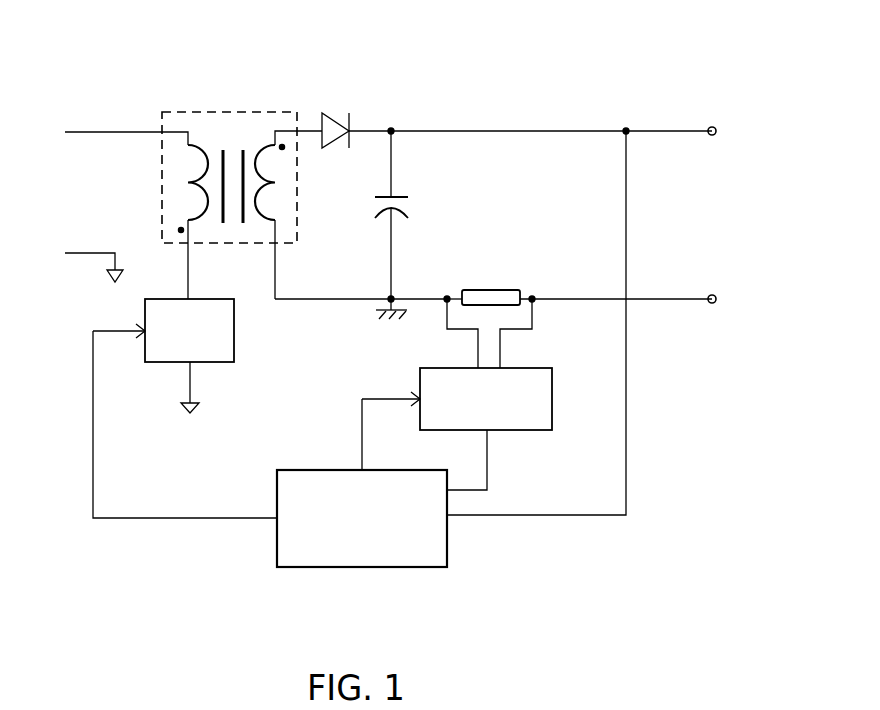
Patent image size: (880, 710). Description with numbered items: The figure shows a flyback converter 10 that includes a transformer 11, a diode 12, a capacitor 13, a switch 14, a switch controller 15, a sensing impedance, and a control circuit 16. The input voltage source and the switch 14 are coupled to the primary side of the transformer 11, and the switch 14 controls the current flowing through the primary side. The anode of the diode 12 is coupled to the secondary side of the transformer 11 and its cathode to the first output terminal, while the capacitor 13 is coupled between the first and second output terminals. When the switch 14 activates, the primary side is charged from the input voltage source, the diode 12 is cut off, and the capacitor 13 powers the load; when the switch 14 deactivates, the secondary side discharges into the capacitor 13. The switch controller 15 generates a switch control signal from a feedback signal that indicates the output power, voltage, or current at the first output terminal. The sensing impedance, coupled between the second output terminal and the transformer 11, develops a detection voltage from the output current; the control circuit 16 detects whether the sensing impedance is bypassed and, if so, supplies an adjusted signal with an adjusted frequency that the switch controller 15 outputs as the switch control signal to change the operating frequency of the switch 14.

The flyback converter 10 is at (686, 33).
The transformer 11 is at (178, 107).
The diode 12 is at (356, 117).
The capacitor 13 is at (408, 215).
The switch 14 is at (237, 313).
The switch controller 15 is at (290, 567).
The control circuit 16 is at (543, 366).